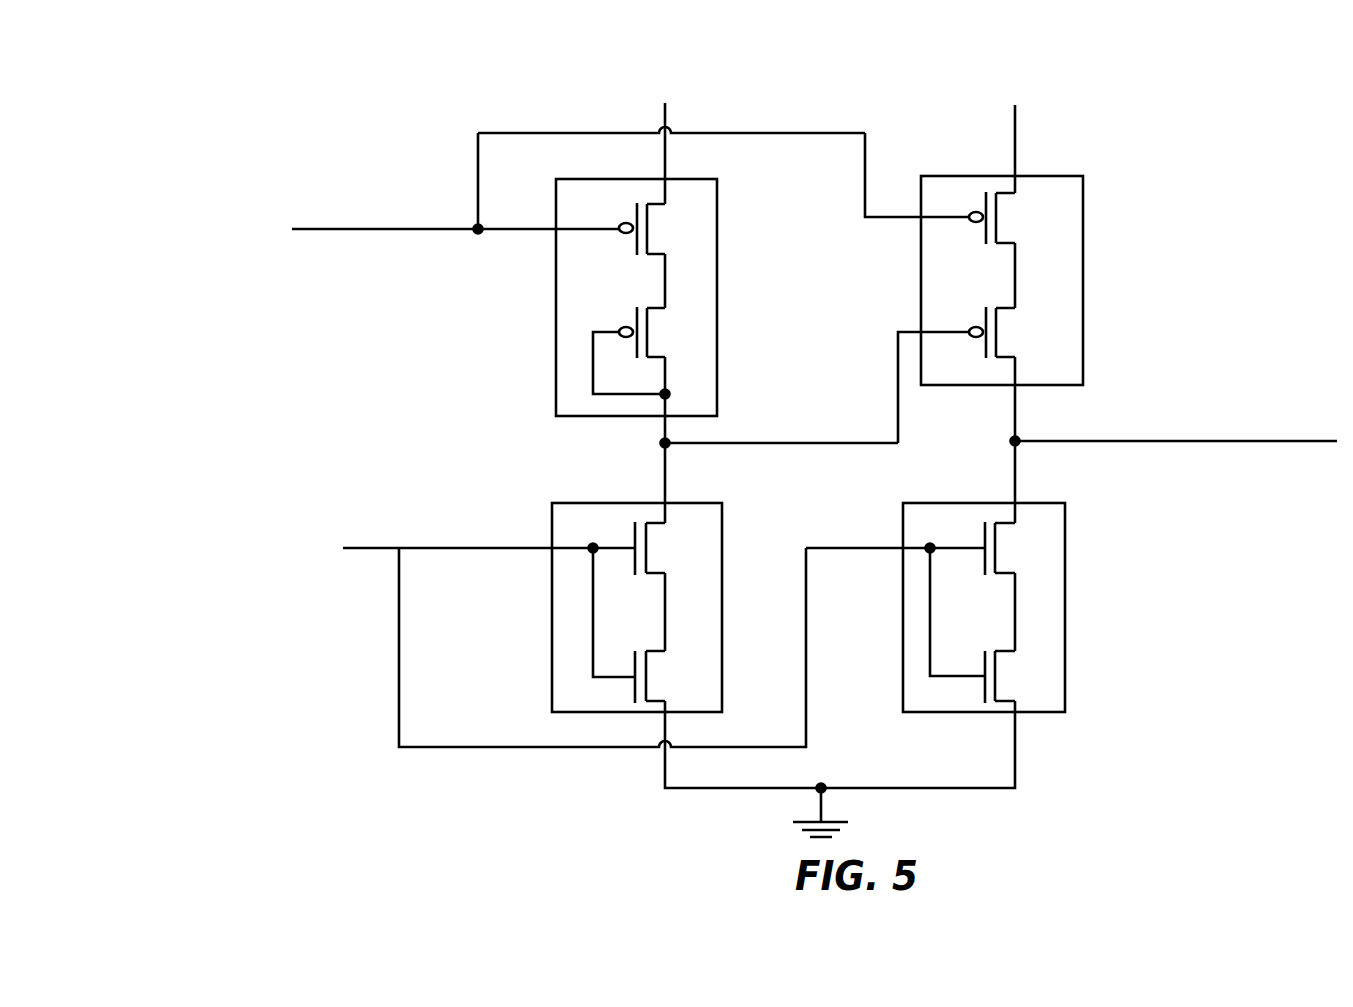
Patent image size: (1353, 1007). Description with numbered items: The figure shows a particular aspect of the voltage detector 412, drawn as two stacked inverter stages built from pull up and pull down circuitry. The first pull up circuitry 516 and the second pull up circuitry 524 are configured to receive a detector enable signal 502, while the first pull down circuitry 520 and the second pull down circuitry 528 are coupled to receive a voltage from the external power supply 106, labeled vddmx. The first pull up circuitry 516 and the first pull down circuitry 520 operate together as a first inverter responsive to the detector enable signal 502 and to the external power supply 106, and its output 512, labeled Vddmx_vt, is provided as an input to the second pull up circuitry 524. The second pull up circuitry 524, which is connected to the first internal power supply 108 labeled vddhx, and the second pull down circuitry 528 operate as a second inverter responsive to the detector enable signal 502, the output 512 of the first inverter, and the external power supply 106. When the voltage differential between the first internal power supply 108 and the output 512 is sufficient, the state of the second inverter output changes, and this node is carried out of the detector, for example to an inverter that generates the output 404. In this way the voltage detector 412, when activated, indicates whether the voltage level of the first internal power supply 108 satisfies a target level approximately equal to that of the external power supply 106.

The voltage detector 412 is at (295, 62).
The external power supply 106 is at (476, 314).
The first internal power supply 108 is at (1020, 109).
The detector enable signal 502 is at (424, 215).
The first pull up circuitry 516 is at (556, 357).
The second pull up circuitry 524 is at (1083, 200).
The output of the first inverter 512 is at (780, 432).
The output 404 is at (1176, 412).
The first pull down circuitry 520 is at (552, 503).
The second pull down circuitry 528 is at (1075, 755).